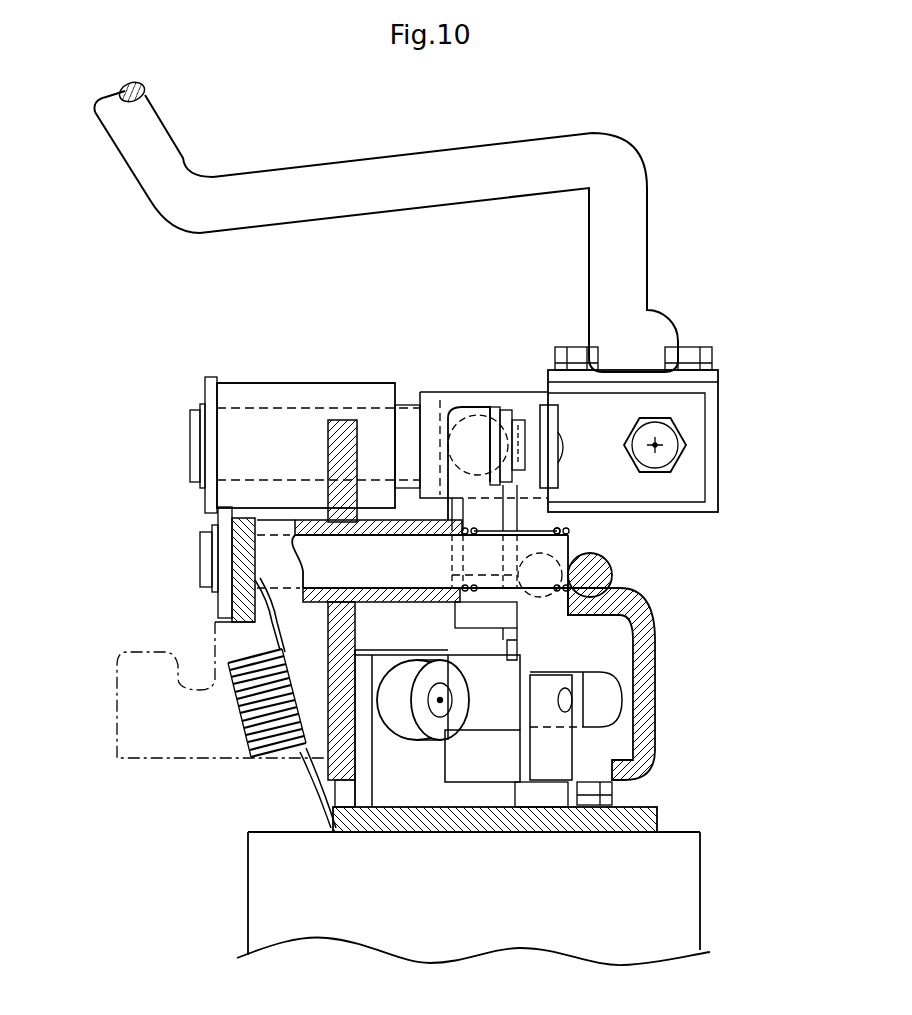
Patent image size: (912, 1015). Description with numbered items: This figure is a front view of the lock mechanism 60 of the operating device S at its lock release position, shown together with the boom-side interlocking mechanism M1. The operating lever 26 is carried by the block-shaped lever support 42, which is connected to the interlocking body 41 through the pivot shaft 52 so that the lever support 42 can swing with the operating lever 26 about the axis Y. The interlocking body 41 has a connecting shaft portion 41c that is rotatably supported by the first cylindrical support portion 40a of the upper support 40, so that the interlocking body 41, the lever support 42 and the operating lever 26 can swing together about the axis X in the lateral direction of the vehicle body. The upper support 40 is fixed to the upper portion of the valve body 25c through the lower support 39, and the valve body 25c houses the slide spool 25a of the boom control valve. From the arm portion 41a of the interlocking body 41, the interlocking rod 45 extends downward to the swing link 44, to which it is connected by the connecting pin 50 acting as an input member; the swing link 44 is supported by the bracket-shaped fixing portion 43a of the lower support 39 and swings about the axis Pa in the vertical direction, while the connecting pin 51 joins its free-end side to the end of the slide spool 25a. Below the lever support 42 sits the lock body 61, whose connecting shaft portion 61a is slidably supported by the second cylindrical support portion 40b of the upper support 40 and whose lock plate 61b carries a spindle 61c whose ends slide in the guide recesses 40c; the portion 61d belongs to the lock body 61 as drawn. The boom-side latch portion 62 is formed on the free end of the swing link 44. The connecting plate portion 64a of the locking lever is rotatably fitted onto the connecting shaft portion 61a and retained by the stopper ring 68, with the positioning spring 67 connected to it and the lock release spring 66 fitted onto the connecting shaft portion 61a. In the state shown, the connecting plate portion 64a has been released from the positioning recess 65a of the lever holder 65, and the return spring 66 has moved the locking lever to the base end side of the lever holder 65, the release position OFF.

The operating lever 26 is at (398, 150).
The operating device S is at (745, 164).
The lever support 42 is at (718, 458).
The pivot shaft 52 is at (665, 462).
The axis Y is at (660, 442).
The upper support 40 is at (320, 430).
The first cylindrical support portion 40a is at (335, 383).
The second cylindrical support portion 40b is at (312, 520).
The guide recess 40c is at (606, 562).
The interlocking body 41 is at (487, 392).
The arm portion 41a is at (532, 398).
The connecting shaft portion 41c is at (188, 425).
The axis X is at (305, 445).
The boom-side interlocking mechanism M1 is at (458, 398).
The lock release spring 66 is at (560, 530).
The connecting plate portion 64a is at (205, 551).
The stopper ring 68 is at (215, 522).
The connecting shaft portion 61a is at (205, 572).
The positioning spring 67 is at (232, 688).
The lever holder 65 is at (117, 692).
The positioning recess 65a is at (215, 668).
The release position OFF is at (242, 745).
The interlocking rod 45 is at (440, 621).
The swing link 44 is at (413, 738).
The fixing portion 43a is at (437, 762).
The axis Pa is at (443, 703).
The connecting pin 50 is at (507, 690).
The connecting pin 51 is at (573, 703).
The boom-side latch portion 62 is at (620, 703).
The lock body 61 is at (660, 615).
The lock plate 61b is at (657, 655).
The spindle 61c is at (612, 580).
The bracket portion 61d is at (657, 688).
The lock mechanism 60 is at (738, 722).
The slide spool 25a is at (597, 790).
The lower support 39 is at (657, 818).
The valve body 25c is at (248, 915).